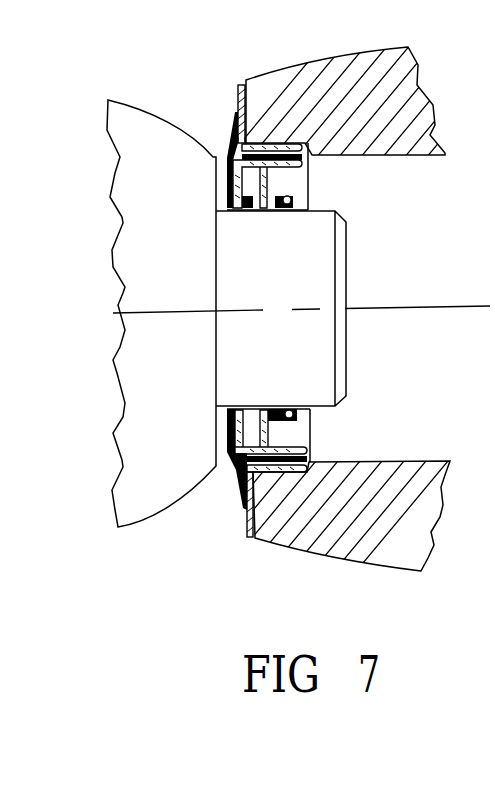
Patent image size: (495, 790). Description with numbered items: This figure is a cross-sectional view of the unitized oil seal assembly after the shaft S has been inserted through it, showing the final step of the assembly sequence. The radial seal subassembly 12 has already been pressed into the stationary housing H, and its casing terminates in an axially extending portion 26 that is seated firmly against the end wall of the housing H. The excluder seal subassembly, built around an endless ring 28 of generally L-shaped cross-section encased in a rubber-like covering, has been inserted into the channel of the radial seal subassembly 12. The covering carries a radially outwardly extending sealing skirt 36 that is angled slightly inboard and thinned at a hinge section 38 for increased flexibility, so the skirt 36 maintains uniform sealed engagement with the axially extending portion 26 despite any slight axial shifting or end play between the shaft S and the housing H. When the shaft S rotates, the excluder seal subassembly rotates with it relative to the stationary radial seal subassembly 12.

The shaft S is at (340, 262).
The stationary housing H is at (308, 550).
The radial seal subassembly 12 is at (312, 449).
The axially extending portion 26 is at (247, 533).
The endless ring 28 is at (228, 422).
The sealing skirt 36 is at (245, 498).
The hinge section 38 is at (216, 466).